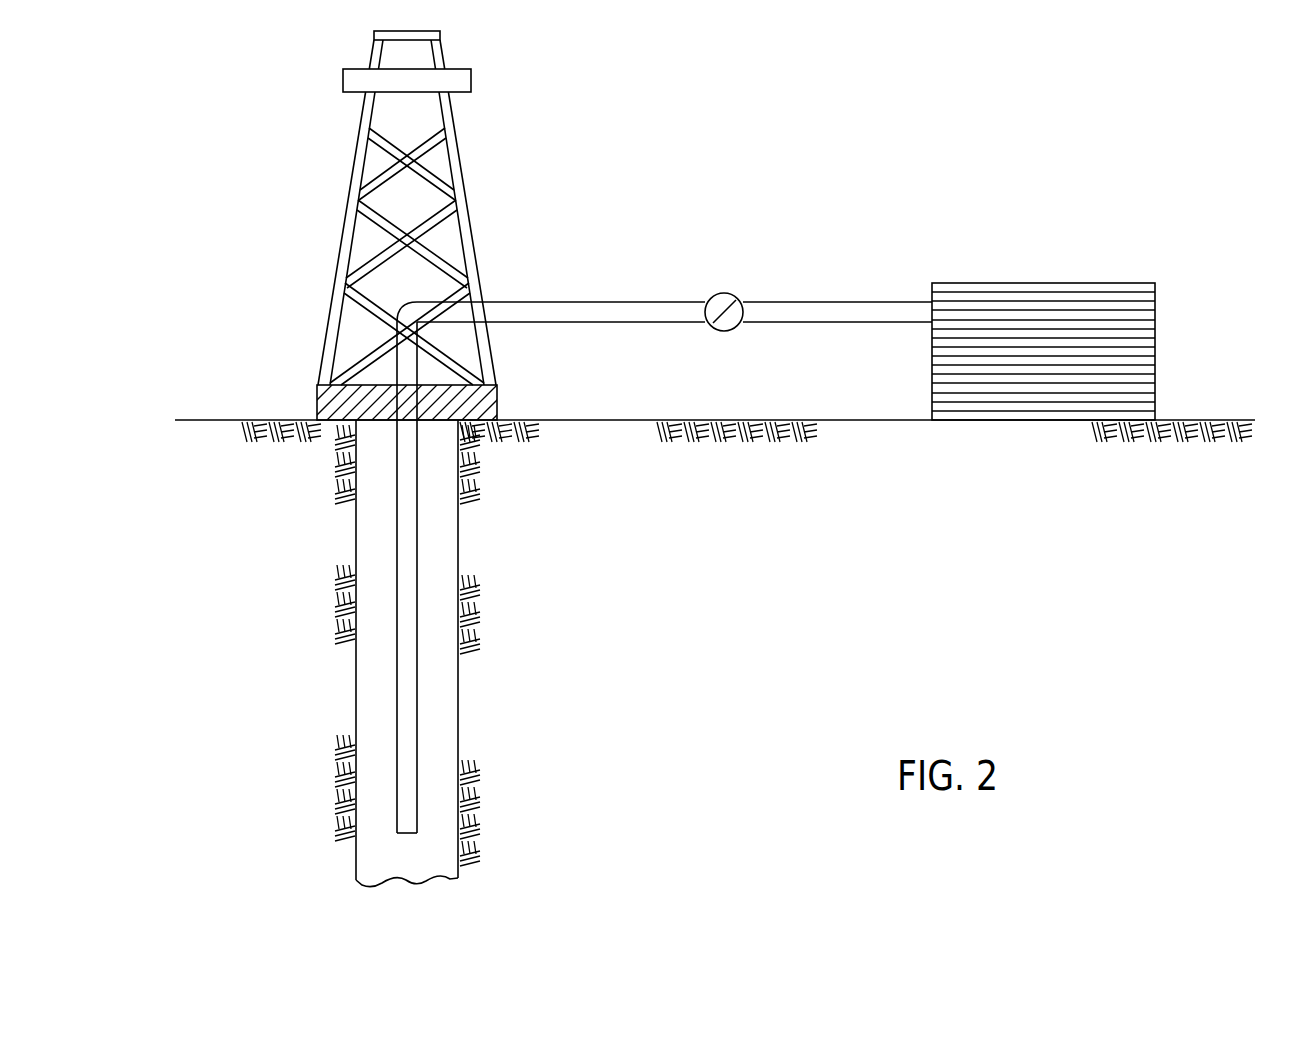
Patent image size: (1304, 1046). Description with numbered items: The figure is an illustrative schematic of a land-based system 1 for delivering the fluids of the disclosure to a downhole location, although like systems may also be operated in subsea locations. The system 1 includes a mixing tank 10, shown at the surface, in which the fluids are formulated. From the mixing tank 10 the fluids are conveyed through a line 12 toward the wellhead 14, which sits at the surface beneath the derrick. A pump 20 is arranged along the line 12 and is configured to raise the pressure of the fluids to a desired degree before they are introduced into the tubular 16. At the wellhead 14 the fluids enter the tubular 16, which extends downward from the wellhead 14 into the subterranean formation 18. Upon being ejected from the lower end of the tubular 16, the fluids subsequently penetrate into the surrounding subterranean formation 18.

The system 1 is at (242, 176).
The mixing tank 10 is at (1053, 283).
The line 12 is at (560, 302).
The wellhead 14 is at (317, 389).
The tubular 16 is at (417, 535).
The subterranean formation 18 is at (226, 650).
The pump 20 is at (723, 293).